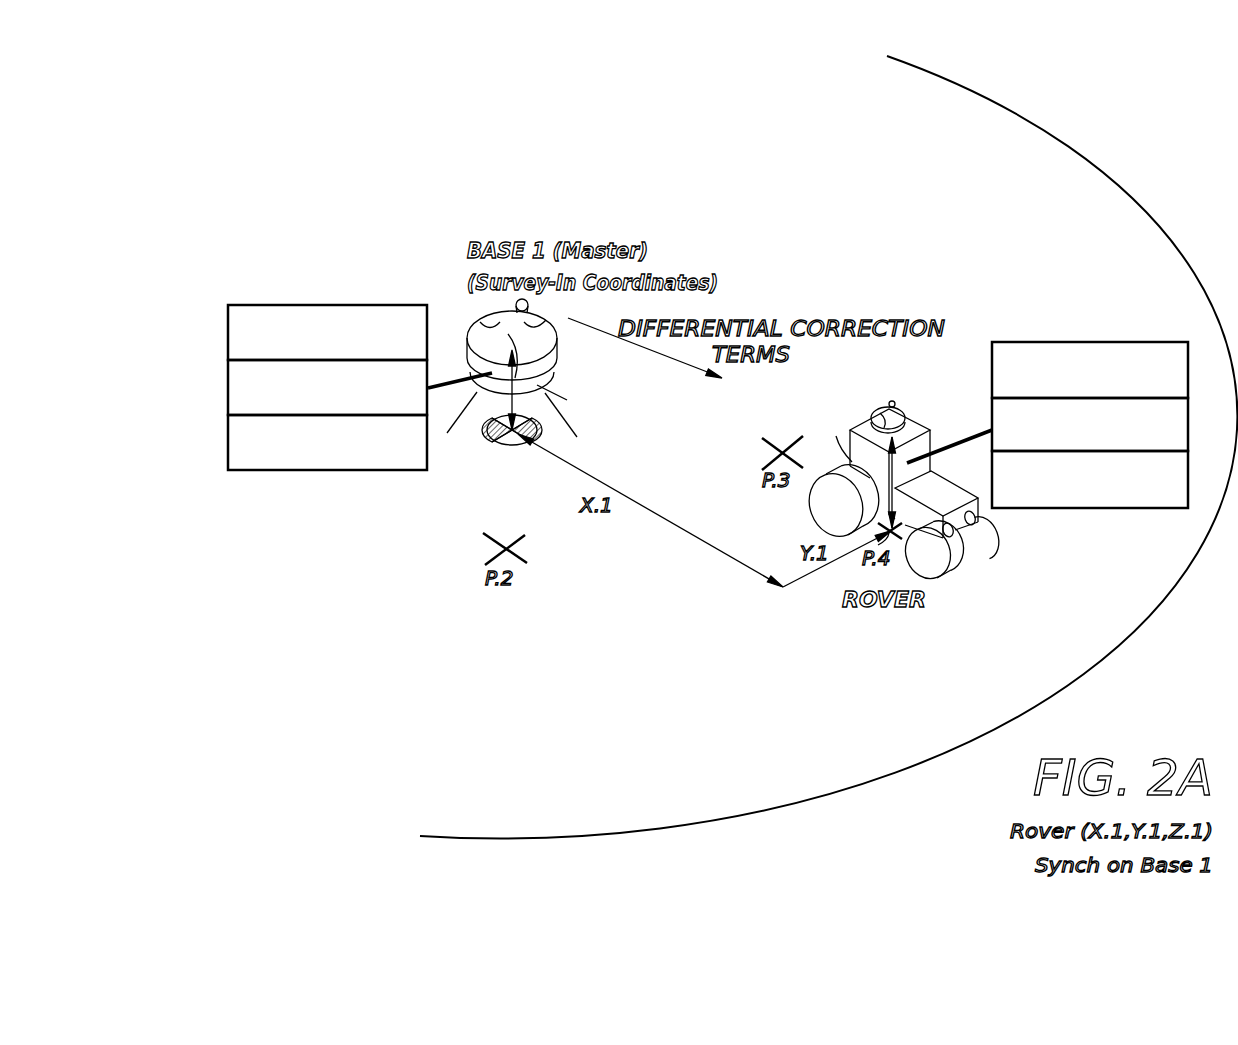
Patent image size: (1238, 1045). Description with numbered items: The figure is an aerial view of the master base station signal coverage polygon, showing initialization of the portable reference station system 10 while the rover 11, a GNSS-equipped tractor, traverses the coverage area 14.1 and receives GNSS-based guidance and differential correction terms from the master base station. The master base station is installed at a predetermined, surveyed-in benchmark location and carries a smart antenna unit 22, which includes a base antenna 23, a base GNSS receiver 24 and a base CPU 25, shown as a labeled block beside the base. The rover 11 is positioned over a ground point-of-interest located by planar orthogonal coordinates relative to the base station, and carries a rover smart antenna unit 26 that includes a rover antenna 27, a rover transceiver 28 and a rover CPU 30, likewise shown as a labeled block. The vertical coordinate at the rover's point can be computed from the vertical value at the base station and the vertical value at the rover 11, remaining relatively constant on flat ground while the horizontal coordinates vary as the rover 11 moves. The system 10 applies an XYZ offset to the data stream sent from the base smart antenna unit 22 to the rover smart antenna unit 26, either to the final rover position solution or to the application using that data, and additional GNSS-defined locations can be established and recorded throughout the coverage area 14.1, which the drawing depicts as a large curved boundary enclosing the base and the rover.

The portable reference station system 10 is at (850, 267).
The rover 11 is at (900, 477).
The coverage area 14.1 is at (767, 710).
The smart antenna unit 22 is at (486, 322).
The base antenna 23 is at (327, 332).
The base GNSS receiver 24 is at (327, 387).
The base CPU 25 is at (327, 442).
The rover smart antenna unit 26 is at (878, 413).
The rover antenna 27 is at (1090, 370).
The rover transceiver 28 is at (1090, 424).
The rover CPU 30 is at (1090, 479).